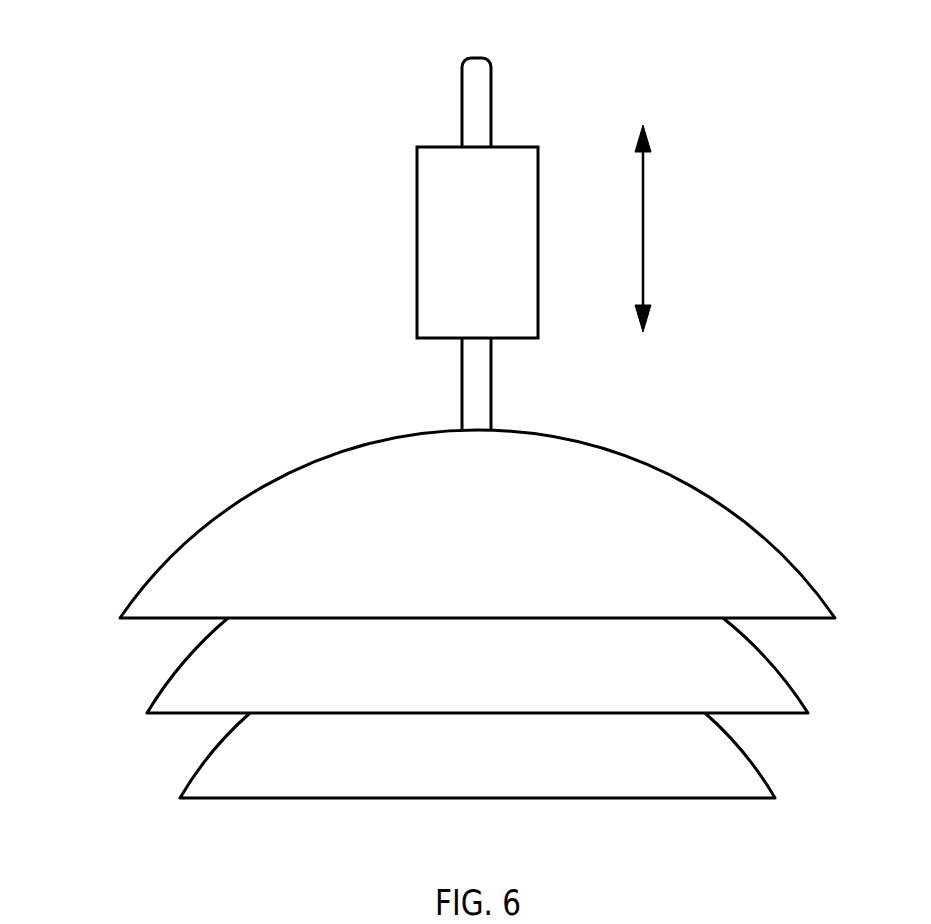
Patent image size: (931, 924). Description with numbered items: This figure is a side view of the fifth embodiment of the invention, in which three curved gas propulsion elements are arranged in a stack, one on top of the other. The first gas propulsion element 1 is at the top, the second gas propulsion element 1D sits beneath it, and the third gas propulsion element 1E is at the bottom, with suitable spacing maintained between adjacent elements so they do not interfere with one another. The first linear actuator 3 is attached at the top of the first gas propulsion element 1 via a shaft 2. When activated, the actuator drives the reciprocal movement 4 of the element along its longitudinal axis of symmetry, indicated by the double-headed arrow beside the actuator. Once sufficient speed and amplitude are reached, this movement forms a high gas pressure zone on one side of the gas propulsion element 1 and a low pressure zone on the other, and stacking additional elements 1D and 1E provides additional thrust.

The first gas propulsion element 1 is at (190, 580).
The second gas propulsion element 1D is at (190, 688).
The third gas propulsion element 1E is at (210, 780).
The shaft 2 is at (477, 398).
The first linear actuator 3 is at (442, 236).
The reciprocal movement 4 is at (643, 237).